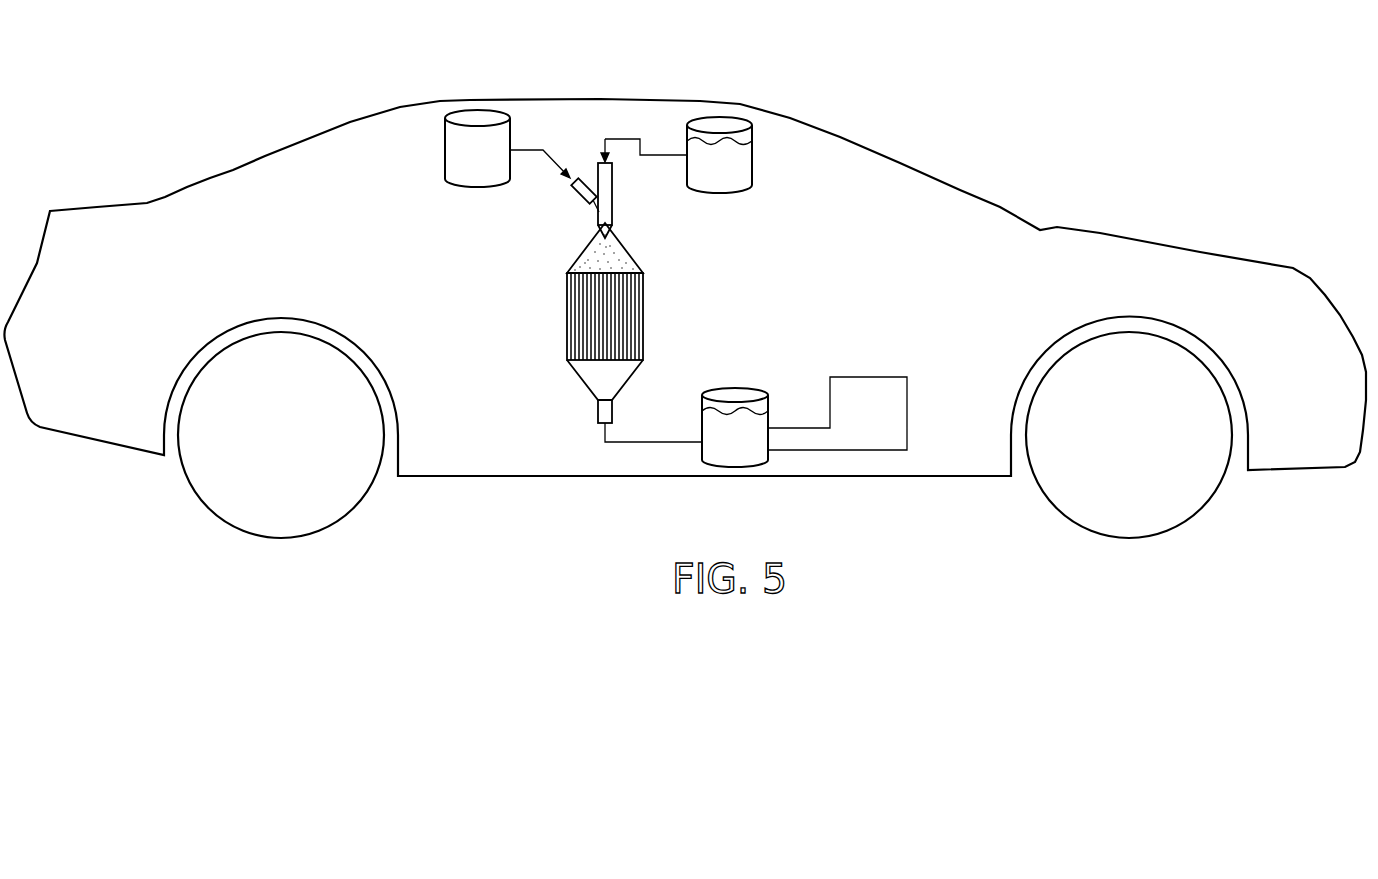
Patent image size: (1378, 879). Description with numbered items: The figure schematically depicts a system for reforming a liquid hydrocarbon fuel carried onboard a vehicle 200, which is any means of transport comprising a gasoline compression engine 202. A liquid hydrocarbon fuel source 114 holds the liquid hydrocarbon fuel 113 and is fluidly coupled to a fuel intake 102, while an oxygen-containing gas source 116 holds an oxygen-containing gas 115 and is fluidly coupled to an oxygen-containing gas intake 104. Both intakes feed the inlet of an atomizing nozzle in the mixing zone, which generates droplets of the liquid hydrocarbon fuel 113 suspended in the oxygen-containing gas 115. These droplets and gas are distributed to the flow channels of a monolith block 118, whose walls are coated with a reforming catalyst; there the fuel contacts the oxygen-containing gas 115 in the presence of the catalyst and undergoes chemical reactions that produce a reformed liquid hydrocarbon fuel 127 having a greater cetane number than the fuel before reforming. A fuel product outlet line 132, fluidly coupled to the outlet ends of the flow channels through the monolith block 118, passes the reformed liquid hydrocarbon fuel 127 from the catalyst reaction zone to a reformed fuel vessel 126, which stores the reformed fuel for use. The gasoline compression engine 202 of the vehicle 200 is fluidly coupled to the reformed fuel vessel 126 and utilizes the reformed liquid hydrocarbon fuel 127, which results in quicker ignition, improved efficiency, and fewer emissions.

The vehicle 200 is at (610, 100).
The oxygen-containing gas source 116 is at (445, 153).
The oxygen-containing gas 115 is at (460, 158).
The oxygen-containing gas intake 104 is at (580, 198).
The fuel intake 102 is at (612, 200).
The liquid hydrocarbon fuel source 114 is at (752, 175).
The liquid hydrocarbon fuel 113 is at (730, 183).
The monolith block 118 is at (643, 288).
The fuel product outlet line 132 is at (645, 442).
The reformed fuel vessel 126 is at (733, 390).
The reformed liquid hydrocarbon fuel 127 is at (740, 457).
The gasoline compression engine 202 is at (907, 420).